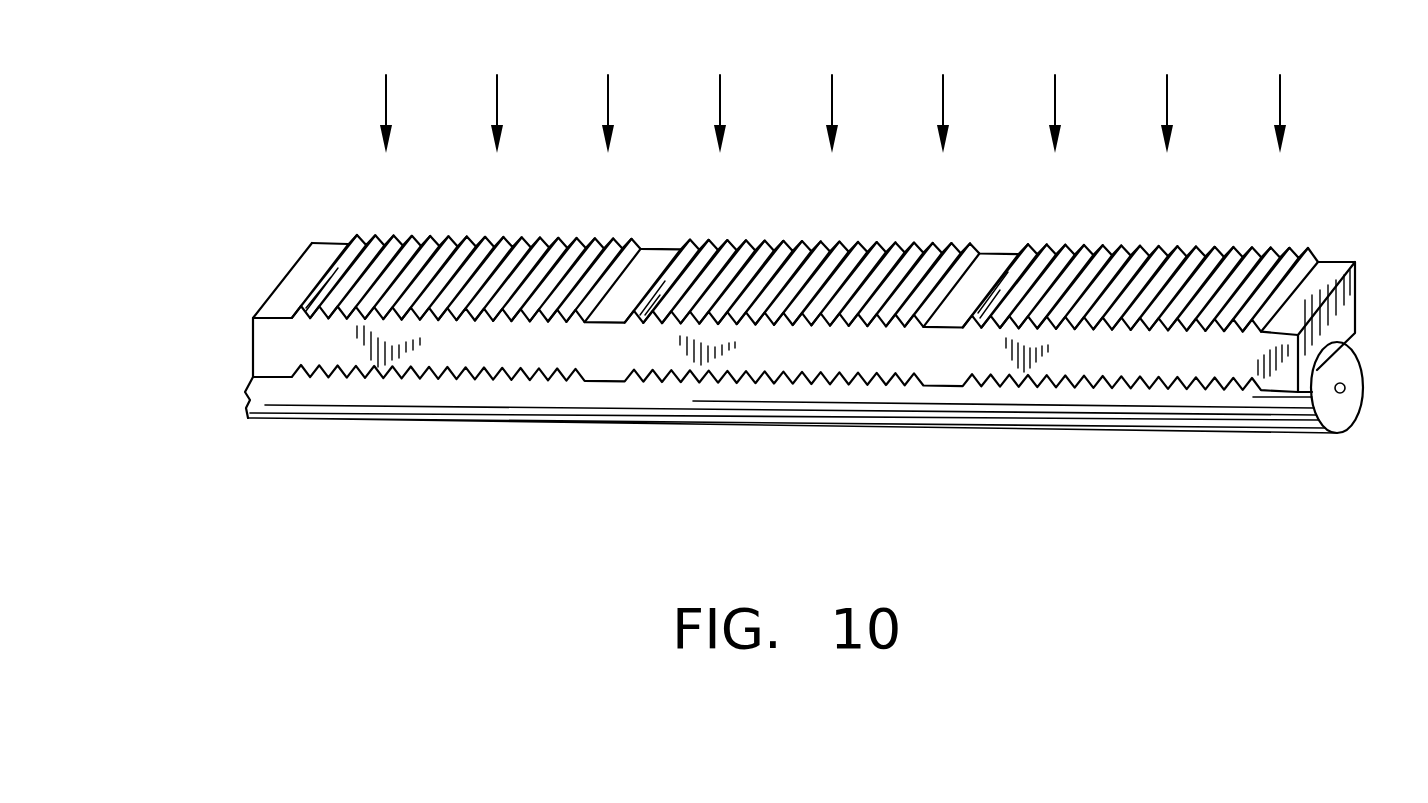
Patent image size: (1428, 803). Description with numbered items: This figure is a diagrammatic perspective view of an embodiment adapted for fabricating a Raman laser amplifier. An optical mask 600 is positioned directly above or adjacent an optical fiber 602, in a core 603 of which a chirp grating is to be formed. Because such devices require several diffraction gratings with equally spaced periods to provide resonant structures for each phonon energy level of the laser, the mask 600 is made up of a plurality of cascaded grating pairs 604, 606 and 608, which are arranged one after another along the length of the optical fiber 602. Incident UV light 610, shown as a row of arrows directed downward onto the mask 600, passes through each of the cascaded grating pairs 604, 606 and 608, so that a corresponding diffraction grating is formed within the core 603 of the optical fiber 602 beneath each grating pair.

The optical mask 600 is at (205, 346).
The optical fiber 602 is at (350, 410).
The core 603 is at (1346, 390).
The cascaded grating pair 604 is at (1140, 385).
The cascaded grating pair 606 is at (805, 378).
The cascaded grating pair 608 is at (508, 375).
The incident UV light 610 is at (833, 87).